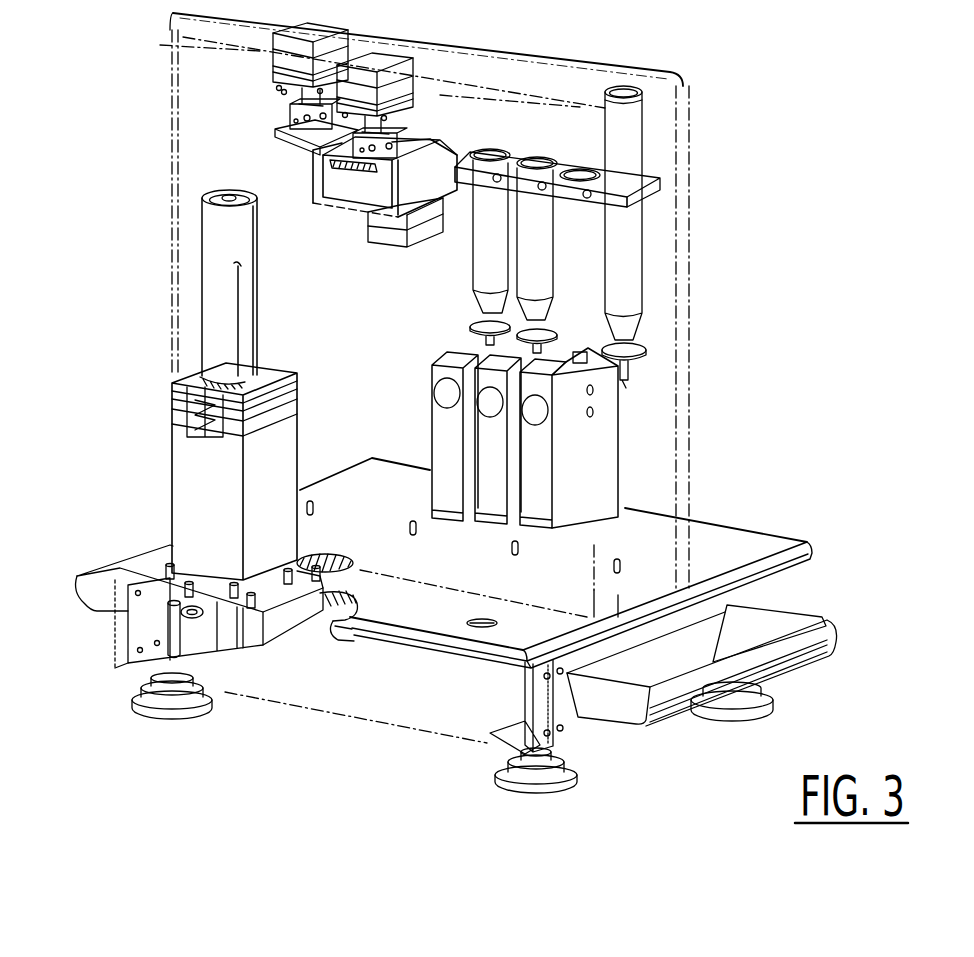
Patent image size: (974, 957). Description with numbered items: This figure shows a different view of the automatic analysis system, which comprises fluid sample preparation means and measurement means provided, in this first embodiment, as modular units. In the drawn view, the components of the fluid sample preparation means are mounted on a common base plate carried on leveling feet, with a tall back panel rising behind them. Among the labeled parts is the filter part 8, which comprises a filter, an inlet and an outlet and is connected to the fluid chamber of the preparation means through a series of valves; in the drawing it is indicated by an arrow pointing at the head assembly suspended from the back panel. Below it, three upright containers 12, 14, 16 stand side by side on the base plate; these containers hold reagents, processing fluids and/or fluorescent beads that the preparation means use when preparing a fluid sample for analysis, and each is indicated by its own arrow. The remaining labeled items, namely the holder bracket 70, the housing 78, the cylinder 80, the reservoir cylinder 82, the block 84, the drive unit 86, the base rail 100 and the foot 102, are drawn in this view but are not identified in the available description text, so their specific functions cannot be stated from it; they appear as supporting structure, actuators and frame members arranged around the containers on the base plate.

The filter part 8 is at (342, 230).
The container 12 is at (442, 523).
The container 14 is at (488, 533).
The container 16 is at (532, 547).
The syringe holder bracket 70 is at (445, 143).
The linear actuator housing 78 is at (190, 480).
The actuator cylinder 80 is at (213, 266).
The reservoir cylinder 82 is at (625, 263).
The mounting block 84 is at (597, 448).
The drive motor 86 is at (393, 240).
The base frame rail 100 is at (820, 628).
The leveling foot 102 is at (577, 777).